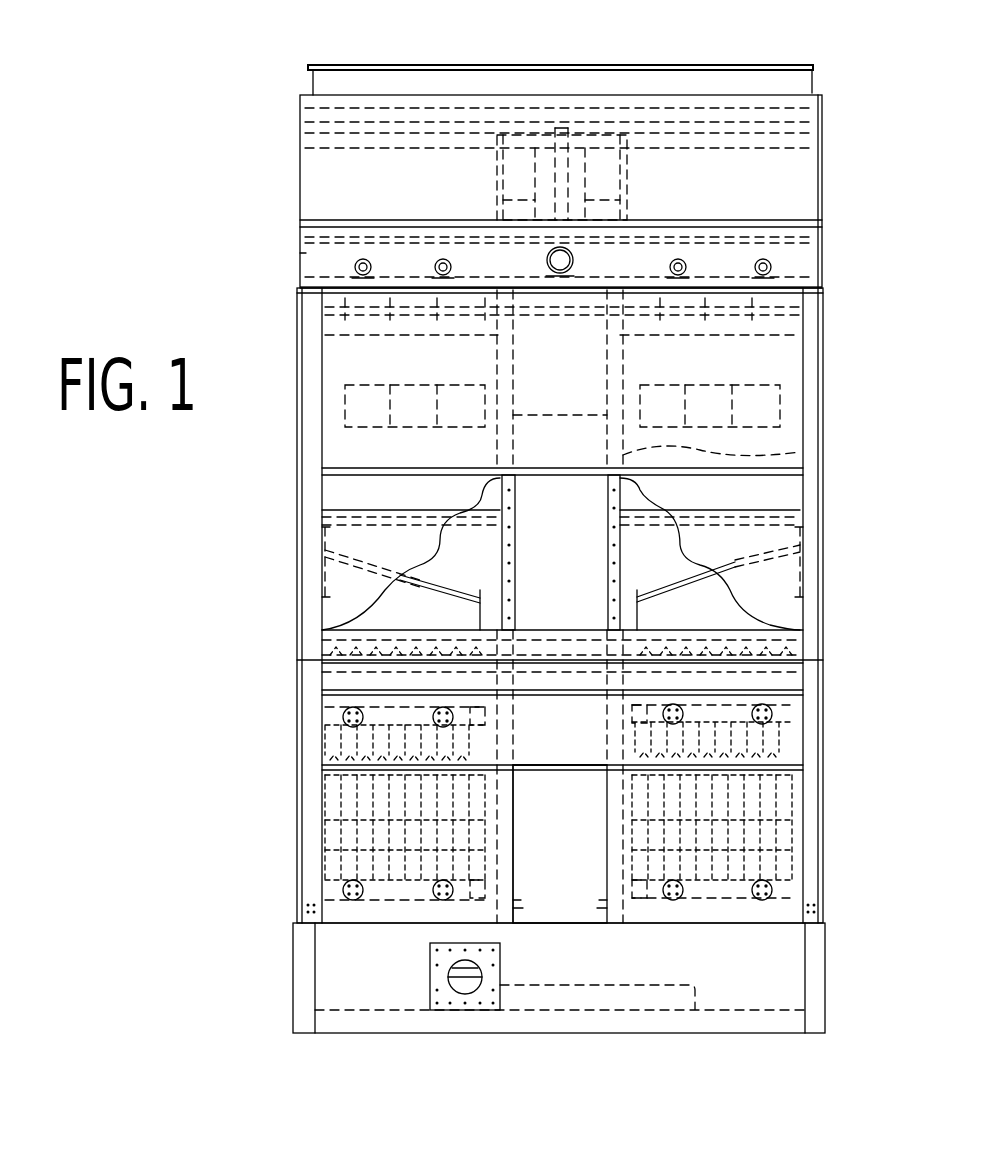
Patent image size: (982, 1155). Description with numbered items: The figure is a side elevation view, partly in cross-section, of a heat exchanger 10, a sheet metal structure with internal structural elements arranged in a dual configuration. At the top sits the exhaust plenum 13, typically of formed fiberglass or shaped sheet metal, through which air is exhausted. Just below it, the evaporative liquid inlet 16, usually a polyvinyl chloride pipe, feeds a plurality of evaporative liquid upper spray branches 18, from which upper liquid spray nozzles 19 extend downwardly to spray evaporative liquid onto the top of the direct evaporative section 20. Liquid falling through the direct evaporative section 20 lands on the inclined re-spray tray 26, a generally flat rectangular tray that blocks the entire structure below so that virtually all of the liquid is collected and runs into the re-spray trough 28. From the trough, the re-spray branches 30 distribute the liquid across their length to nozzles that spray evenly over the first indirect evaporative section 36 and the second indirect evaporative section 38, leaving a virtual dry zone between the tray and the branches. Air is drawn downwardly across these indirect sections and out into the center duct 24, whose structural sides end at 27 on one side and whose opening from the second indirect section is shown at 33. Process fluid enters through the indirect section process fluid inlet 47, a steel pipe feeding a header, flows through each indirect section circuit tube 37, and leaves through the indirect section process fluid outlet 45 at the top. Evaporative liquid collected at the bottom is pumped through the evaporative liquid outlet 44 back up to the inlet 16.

The heat exchanger 10 is at (284, 133).
The exhaust plenum 13 is at (816, 88).
The evaporative liquid inlet 16 is at (600, 266).
The evaporative liquid upper spray branches 18 is at (770, 262).
The upper liquid spray nozzles 19 is at (823, 298).
The direct evaporative section 20 is at (805, 392).
The center duct 24 is at (805, 452).
The re-spray tray 26 is at (715, 548).
The end of center duct structural sides 27 is at (602, 785).
The re-spray trough 28 is at (740, 612).
The re-spray branches 30 is at (810, 636).
The structural opening into center duct 33 is at (505, 790).
The first indirect evaporative section 36 is at (785, 800).
The indirect section circuit tube 37 is at (785, 835).
The second indirect evaporative section 38 is at (325, 825).
The evaporative liquid outlet 44 is at (445, 985).
The indirect section process fluid outlet 45 is at (772, 715).
The indirect section process fluid inlet 47 is at (772, 890).